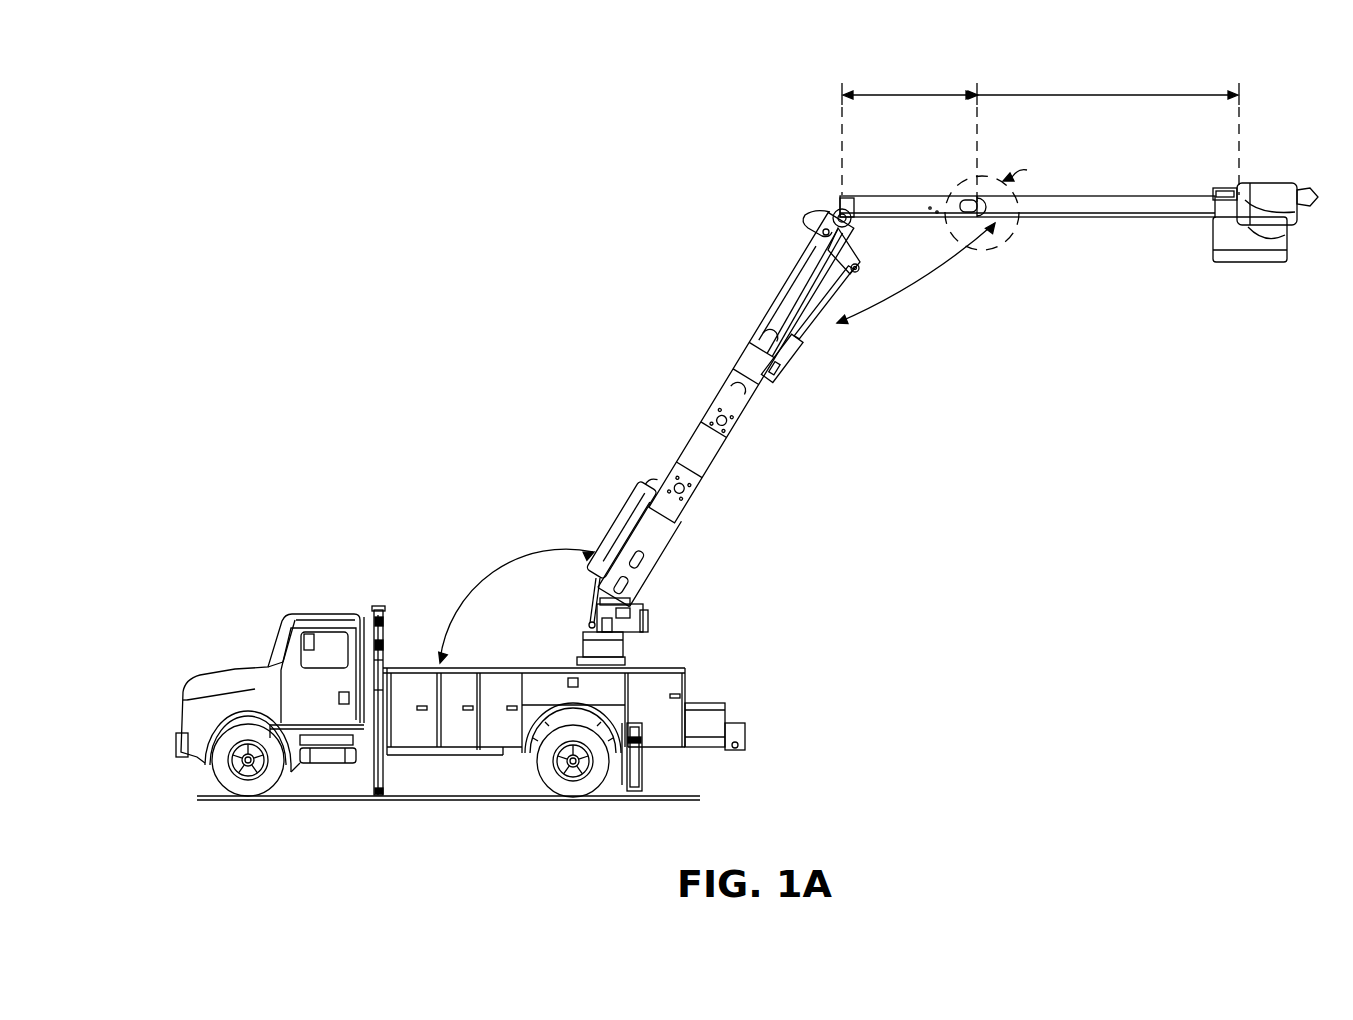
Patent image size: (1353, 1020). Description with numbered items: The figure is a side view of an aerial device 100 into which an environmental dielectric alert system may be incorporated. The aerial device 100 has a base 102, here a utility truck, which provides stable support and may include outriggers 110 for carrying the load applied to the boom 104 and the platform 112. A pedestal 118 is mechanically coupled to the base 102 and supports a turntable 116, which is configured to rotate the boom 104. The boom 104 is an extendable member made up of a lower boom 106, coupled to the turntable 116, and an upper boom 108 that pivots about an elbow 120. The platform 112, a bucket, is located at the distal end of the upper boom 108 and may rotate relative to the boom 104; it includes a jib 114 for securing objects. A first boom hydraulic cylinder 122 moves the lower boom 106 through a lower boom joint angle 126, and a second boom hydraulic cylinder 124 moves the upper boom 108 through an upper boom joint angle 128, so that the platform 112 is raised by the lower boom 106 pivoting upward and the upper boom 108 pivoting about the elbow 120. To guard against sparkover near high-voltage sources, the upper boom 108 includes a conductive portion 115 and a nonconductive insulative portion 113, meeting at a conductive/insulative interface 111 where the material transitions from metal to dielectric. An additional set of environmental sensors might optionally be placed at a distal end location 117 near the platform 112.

The aerial device 100 is at (437, 197).
The base 102 is at (537, 822).
The boom 104 is at (768, 240).
The lower boom 106 is at (697, 507).
The upper boom 108 is at (1103, 196).
The outriggers 110 is at (379, 769).
The conductive/insulative interface 111 is at (984, 187).
The platform 112 is at (1247, 262).
The nonconductive insulative portion 113 is at (1105, 94).
The jib 114 is at (1298, 186).
The conductive portion 115 is at (910, 94).
The turntable 116 is at (640, 617).
The distal end location 117 is at (1222, 208).
The pedestal 118 is at (630, 660).
The elbow 120 is at (835, 213).
The first boom hydraulic cylinder 122 is at (622, 530).
The second boom hydraulic cylinder 124 is at (805, 335).
The lower boom joint angle 126 is at (507, 590).
The upper boom joint angle 128 is at (920, 298).